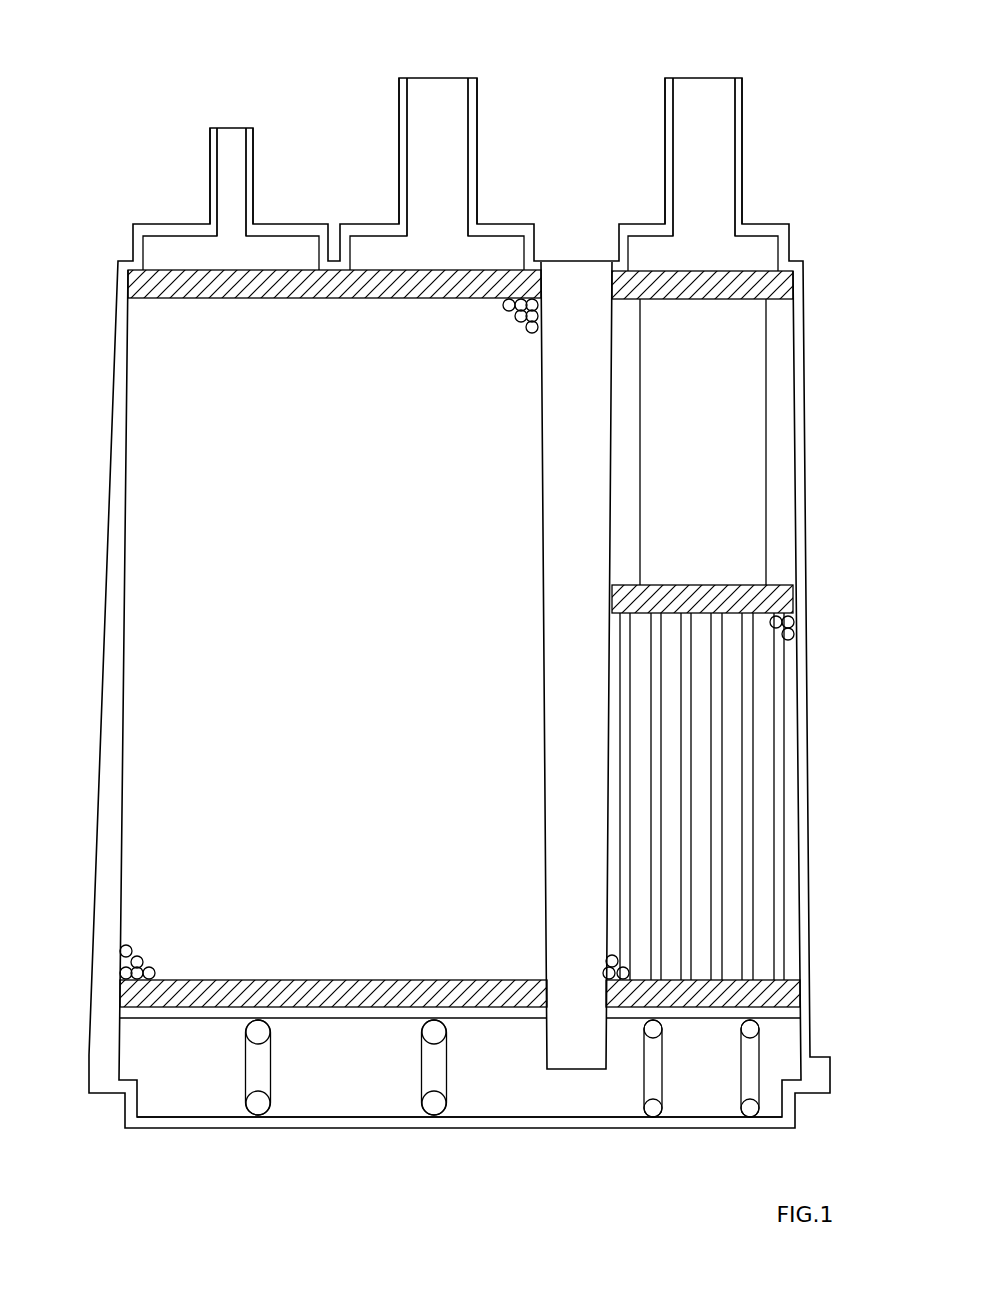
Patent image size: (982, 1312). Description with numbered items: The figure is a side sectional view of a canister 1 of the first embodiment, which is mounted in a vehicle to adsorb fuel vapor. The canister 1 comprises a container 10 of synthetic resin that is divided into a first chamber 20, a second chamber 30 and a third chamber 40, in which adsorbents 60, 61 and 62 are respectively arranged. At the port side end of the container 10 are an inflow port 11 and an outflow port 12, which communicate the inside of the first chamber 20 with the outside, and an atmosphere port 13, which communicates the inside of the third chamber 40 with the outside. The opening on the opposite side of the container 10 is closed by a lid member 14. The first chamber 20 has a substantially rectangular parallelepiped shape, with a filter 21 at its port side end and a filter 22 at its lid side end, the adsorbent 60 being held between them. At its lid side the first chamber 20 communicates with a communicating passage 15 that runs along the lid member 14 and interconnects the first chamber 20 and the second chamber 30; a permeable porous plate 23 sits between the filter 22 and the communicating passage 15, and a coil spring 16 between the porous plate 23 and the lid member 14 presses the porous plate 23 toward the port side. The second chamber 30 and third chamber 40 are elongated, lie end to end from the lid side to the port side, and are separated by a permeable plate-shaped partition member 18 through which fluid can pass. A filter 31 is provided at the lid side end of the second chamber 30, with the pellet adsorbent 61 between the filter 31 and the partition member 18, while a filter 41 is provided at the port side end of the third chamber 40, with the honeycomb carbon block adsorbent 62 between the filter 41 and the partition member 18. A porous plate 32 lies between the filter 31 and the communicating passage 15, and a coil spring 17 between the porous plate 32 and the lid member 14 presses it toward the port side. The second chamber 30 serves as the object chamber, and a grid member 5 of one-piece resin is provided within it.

The canister 1 is at (784, 54).
The grid member 5 is at (796, 796).
The container 10 is at (436, 603).
The inflow port 11 is at (477, 124).
The outflow port 12 is at (253, 156).
The atmosphere port 13 is at (742, 127).
The lid member 14 is at (508, 1125).
The communicating passage 15 is at (570, 1098).
The coil spring 16 is at (430, 1105).
The coil spring 17 is at (656, 1110).
The partition member 18 is at (624, 612).
The first chamber 20 is at (120, 462).
The filter 21 is at (146, 290).
The filter 22 is at (132, 994).
The porous plate 23 is at (150, 1015).
The second chamber 30 is at (804, 712).
The filter 31 is at (792, 992).
The porous plate 32 is at (770, 1013).
The third chamber 40 is at (804, 332).
The filter 41 is at (742, 272).
The adsorbent 60 is at (128, 960).
The adsorbent 61 is at (796, 626).
The adsorbent 62 is at (657, 500).